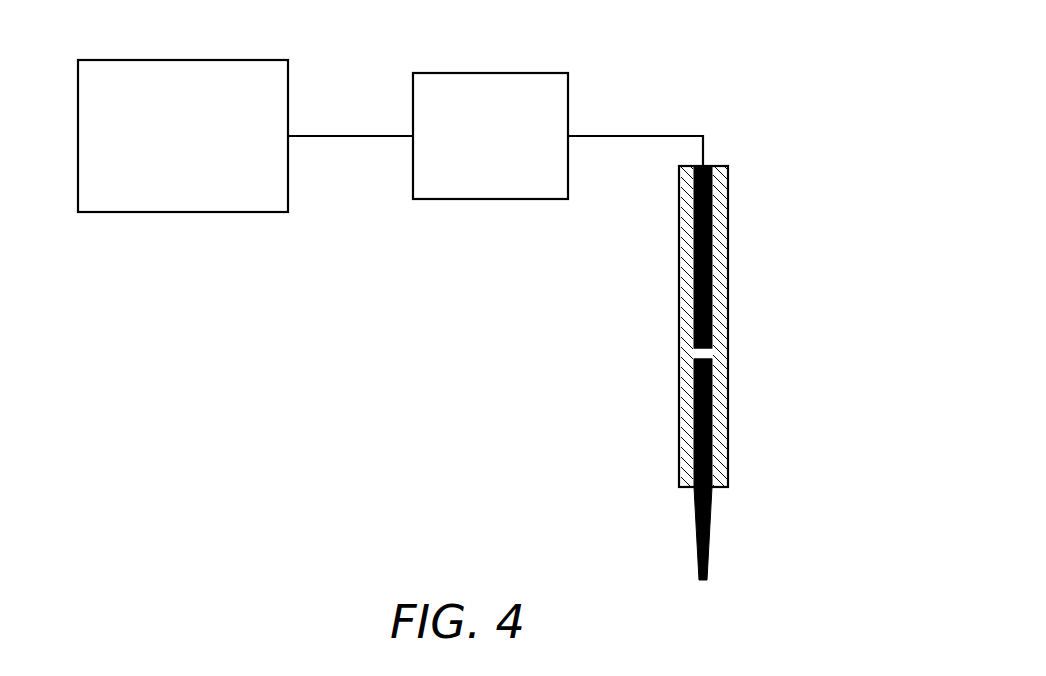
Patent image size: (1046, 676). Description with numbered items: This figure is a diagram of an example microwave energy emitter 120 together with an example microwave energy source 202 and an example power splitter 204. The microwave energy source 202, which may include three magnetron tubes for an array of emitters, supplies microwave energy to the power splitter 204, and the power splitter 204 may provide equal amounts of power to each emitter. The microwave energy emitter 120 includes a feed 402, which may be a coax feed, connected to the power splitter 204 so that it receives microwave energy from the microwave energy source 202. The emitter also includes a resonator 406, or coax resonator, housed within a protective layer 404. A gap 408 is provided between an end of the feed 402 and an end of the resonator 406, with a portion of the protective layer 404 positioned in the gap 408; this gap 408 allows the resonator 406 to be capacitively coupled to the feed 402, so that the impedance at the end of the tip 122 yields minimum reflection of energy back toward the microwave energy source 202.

The microwave energy source 202 is at (203, 193).
The power splitter 204 is at (510, 177).
The microwave energy emitter 120 is at (747, 155).
The protective layer 404 is at (808, 261).
The feed 402 is at (694, 255).
The gap 408 is at (692, 353).
The resonator 406 is at (693, 440).
The tip 122 is at (712, 525).